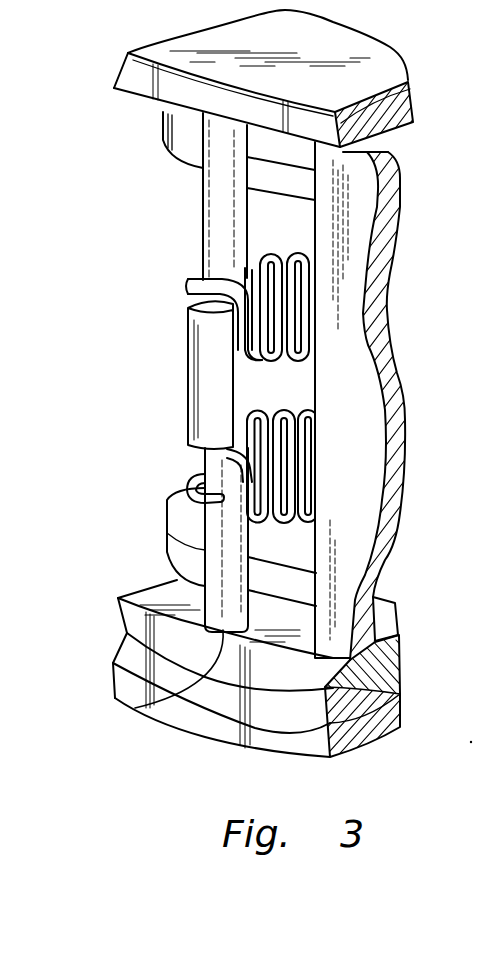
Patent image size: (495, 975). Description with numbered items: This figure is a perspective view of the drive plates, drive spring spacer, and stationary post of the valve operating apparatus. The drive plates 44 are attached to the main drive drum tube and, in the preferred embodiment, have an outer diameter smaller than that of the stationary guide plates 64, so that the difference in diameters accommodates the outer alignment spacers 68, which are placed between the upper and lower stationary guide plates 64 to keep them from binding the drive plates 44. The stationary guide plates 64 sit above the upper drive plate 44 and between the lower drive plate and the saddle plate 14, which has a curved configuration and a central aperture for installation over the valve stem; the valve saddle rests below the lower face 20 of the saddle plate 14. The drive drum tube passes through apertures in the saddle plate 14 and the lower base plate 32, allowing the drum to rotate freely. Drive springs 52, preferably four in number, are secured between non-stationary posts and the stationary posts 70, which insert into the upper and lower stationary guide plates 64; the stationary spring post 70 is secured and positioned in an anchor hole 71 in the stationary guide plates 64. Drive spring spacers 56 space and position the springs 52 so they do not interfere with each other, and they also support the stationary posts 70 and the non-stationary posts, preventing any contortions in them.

The saddle plate 14 is at (263, 735).
The lower face 20 is at (197, 737).
The lower base plate 32 is at (157, 673).
The drive plates 44 is at (182, 140).
The drive springs 52 is at (190, 283).
The drive spring spacers 56 is at (280, 313).
The stationary guide plates 64 is at (127, 78).
The outer alignment spacers 68 is at (358, 428).
The stationary posts 70 is at (220, 219).
The anchor hole 71 is at (157, 700).